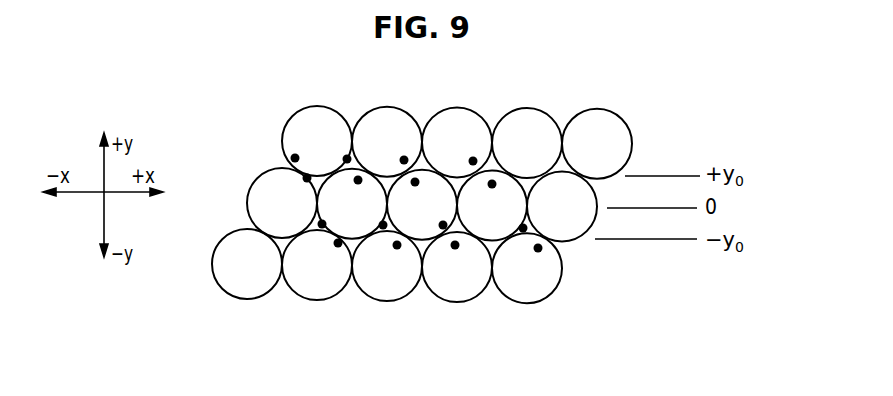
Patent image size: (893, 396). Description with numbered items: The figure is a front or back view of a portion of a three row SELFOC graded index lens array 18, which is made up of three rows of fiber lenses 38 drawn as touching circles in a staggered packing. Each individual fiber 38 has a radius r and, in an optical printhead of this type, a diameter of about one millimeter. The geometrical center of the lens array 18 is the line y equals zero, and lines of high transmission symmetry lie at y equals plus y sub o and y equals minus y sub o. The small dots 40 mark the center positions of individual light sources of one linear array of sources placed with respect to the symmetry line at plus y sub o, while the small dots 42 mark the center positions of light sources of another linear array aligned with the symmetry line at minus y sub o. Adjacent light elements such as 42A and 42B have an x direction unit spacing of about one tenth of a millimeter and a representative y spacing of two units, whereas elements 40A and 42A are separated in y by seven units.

The graded index lens array 18 is at (531, 313).
The fiber lenses 38 is at (578, 110).
The small dots 40 is at (303, 175).
The light element 40A is at (360, 176).
The small dots 42 is at (443, 229).
The light element 42A is at (320, 228).
The light element 42B is at (337, 247).